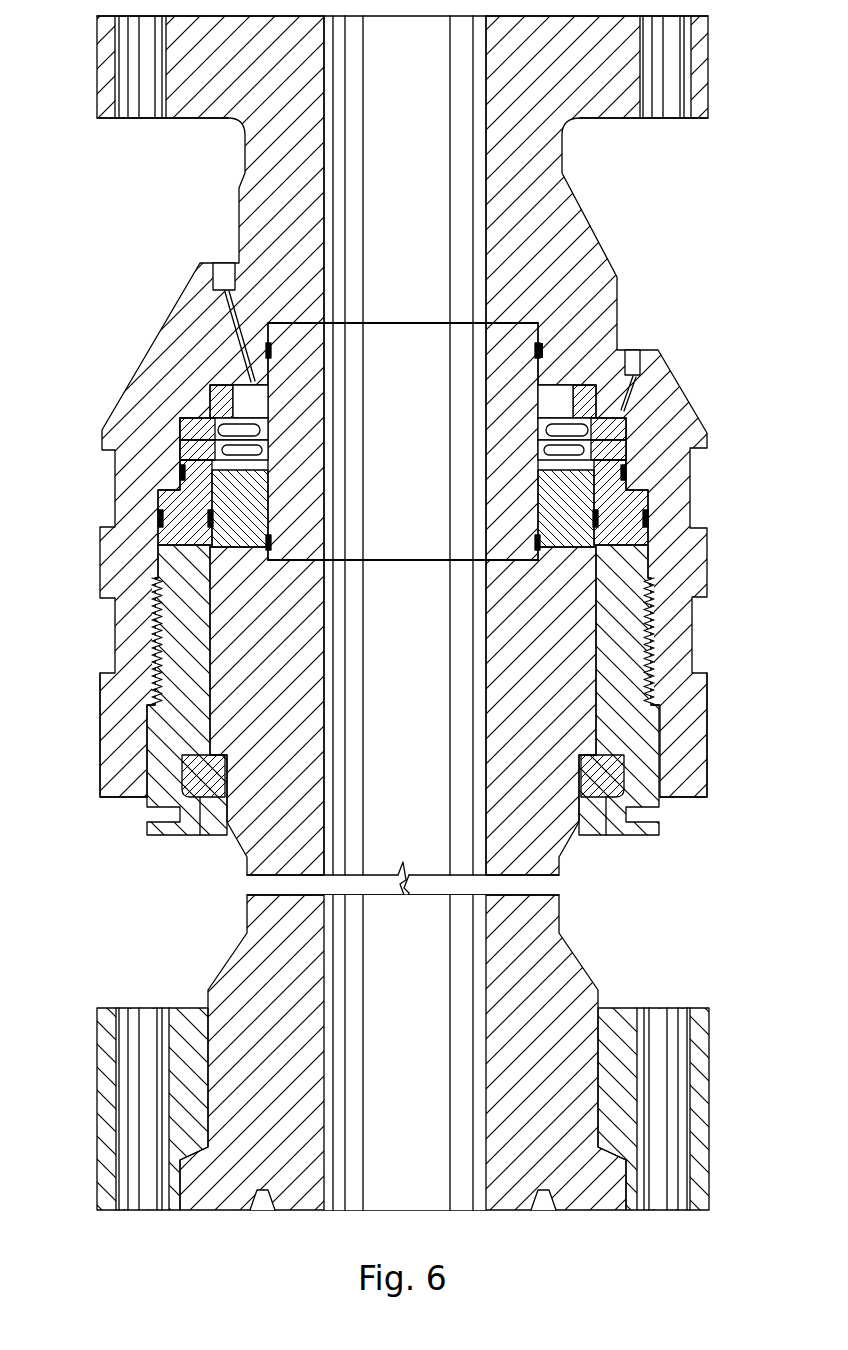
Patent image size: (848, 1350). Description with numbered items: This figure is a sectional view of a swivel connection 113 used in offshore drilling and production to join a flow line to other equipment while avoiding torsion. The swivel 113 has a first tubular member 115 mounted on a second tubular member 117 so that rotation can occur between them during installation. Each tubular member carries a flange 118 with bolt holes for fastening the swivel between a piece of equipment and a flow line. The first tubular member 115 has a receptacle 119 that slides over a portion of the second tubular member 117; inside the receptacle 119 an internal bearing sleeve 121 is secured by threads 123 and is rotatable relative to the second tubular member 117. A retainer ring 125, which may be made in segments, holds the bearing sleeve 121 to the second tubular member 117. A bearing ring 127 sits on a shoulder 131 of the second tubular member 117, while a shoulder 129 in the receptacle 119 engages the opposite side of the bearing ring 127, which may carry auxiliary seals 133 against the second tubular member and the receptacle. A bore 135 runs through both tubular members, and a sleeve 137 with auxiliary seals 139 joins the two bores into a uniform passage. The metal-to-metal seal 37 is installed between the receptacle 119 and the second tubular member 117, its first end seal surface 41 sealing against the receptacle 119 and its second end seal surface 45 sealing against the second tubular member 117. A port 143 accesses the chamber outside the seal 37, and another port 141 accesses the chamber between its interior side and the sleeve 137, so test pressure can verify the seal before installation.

The swivel connection 113 is at (415, 461).
The first tubular member 115 is at (562, 158).
The second tubular member 117 is at (568, 940).
The flange 118 is at (708, 43).
The receptacle 119 is at (707, 698).
The internal bearing sleeve 121 is at (650, 567).
The threads 123 is at (652, 653).
The retainer ring 125 is at (628, 772).
The bearing ring 127 is at (687, 498).
The shoulder 129 is at (167, 500).
The shoulder 131 is at (648, 482).
The auxiliary seals 133 is at (120, 500).
The bore 135 is at (436, 211).
The sleeve 137 is at (268, 393).
The auxiliary seals 139 is at (268, 353).
The port 141 is at (223, 322).
The port 143 is at (630, 388).
The metal-to-metal seal 37 is at (637, 428).
The first end seal surface 41 is at (583, 378).
The second end seal surface 45 is at (232, 500).